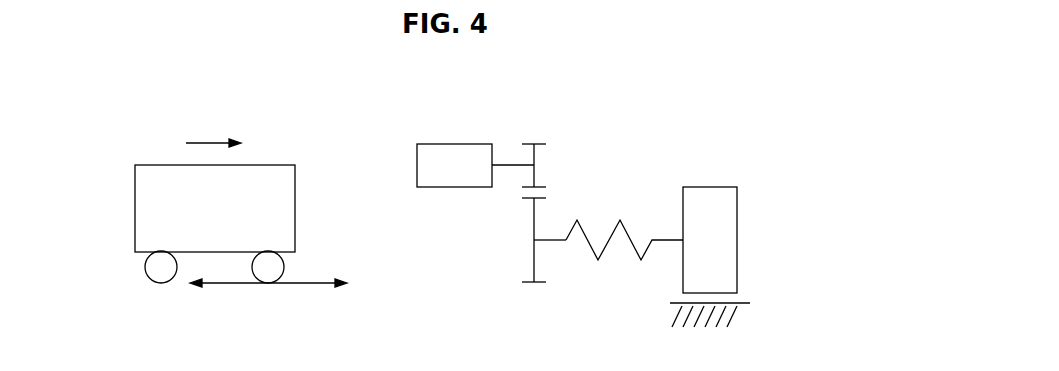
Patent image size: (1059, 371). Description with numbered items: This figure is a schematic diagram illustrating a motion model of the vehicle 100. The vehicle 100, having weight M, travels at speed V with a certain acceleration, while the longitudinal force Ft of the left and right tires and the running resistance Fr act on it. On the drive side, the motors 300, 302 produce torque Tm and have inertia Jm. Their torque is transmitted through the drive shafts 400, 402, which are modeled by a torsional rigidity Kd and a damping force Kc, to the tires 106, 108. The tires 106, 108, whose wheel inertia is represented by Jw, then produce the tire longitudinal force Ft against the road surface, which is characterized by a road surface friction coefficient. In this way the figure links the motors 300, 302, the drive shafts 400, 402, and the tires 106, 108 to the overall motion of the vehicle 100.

The vehicle 100 is at (282, 164).
The motor 300 is at (478, 161).
The motor 302 is at (485, 143).
The drive shaft 400 is at (587, 231).
The drive shaft 402 is at (563, 242).
The tire 106 is at (756, 246).
The tire 108 is at (731, 185).